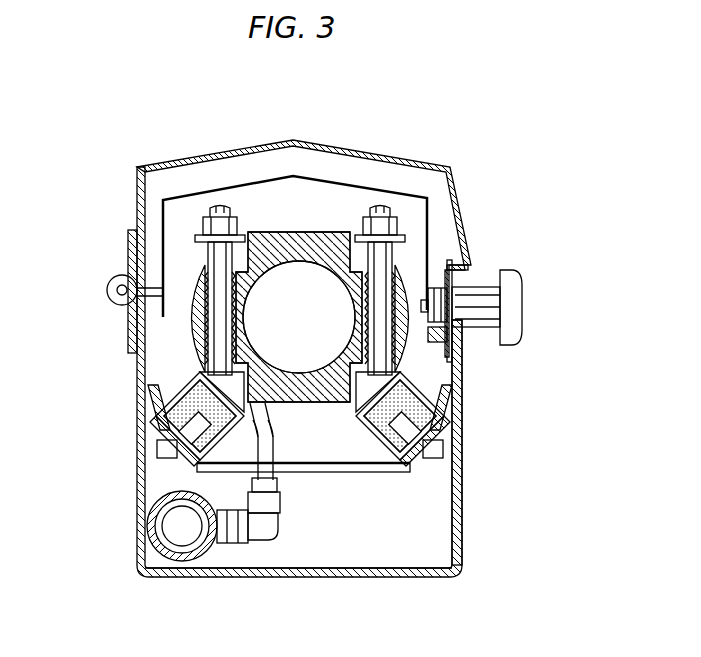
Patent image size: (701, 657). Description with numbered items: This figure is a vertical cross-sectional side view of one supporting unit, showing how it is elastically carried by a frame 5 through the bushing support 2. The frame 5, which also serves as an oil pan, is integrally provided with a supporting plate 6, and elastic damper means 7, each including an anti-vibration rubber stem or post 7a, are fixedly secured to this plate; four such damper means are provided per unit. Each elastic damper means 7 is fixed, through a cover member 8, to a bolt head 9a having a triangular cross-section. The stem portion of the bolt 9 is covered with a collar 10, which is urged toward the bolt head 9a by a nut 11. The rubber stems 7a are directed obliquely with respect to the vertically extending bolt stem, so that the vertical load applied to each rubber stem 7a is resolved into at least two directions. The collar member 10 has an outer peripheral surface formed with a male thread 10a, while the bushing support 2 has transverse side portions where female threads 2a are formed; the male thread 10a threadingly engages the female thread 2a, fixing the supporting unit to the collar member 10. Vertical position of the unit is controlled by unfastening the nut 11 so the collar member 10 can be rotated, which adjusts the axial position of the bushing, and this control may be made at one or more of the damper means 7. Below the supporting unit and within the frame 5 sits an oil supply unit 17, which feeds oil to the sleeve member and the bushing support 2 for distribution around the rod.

The bushing support 2 is at (312, 232).
The female thread 2a is at (195, 322).
The frame 5 is at (457, 532).
The supporting plate 6 is at (393, 474).
The elastic damper means 7 is at (160, 428).
The anti-vibration rubber stem 7a is at (232, 455).
The cover member 8 is at (153, 395).
The bolt 9 is at (218, 268).
The bolt head 9a is at (200, 374).
The collar 10 is at (204, 248).
The male thread 10a is at (200, 350).
The nut 11 is at (205, 225).
The oil supply unit 17 is at (252, 548).